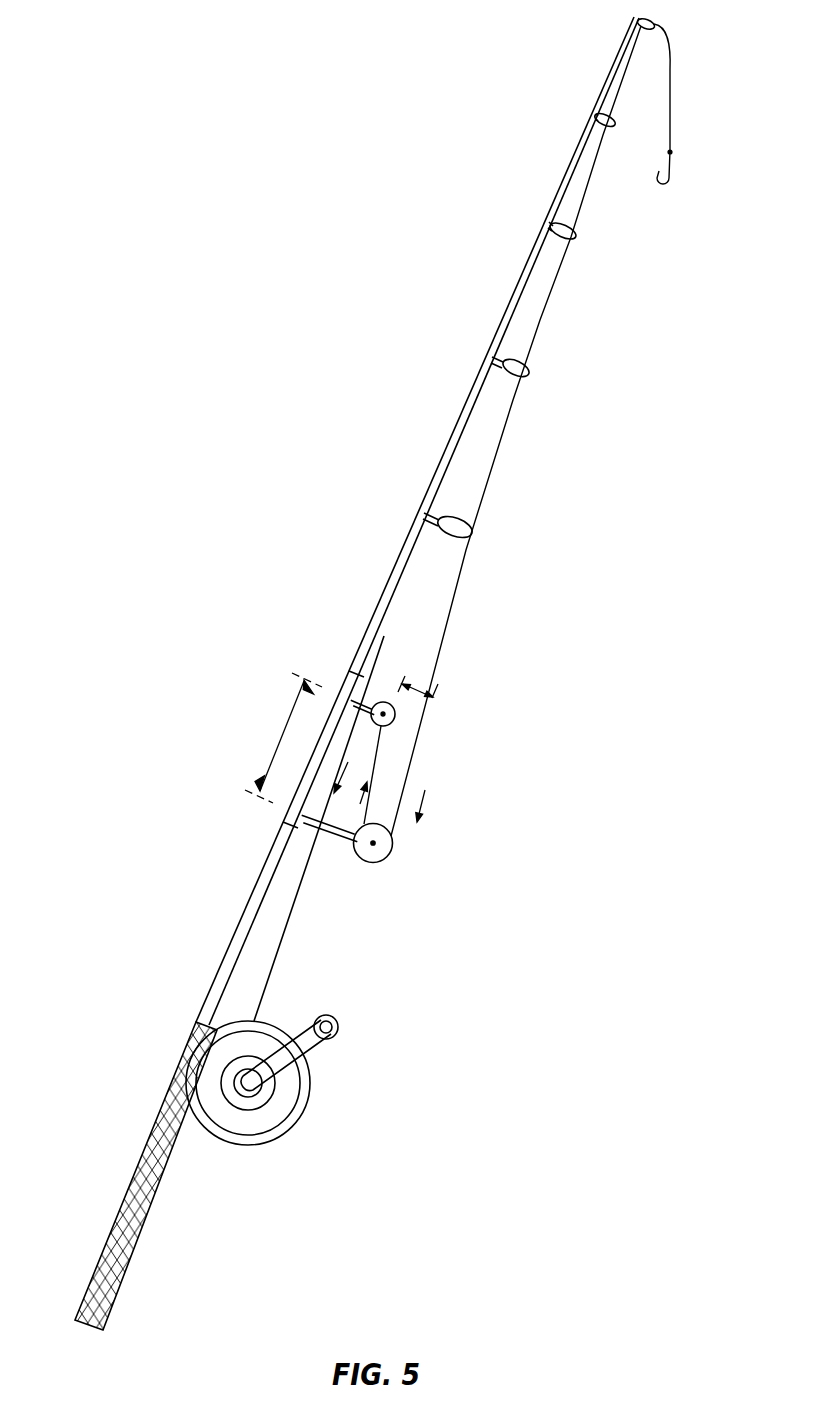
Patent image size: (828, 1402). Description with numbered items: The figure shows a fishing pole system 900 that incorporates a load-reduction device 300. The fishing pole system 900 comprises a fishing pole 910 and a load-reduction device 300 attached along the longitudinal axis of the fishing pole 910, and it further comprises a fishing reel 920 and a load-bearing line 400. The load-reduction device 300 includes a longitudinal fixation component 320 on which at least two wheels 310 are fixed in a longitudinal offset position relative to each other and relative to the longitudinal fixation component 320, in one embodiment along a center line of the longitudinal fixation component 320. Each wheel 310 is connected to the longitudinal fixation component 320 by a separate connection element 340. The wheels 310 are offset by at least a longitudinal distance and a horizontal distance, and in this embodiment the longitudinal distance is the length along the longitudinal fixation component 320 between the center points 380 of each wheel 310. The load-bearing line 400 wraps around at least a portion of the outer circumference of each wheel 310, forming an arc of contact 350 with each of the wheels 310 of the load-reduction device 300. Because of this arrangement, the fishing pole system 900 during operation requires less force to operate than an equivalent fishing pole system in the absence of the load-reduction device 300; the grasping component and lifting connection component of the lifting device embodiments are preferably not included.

The fishing pole system 900 is at (263, 475).
The fishing pole 910 is at (447, 457).
The fishing reel 920 is at (282, 1103).
The load-bearing line 400 is at (277, 944).
The load-reduction device 300 is at (412, 875).
The wheels 310 is at (394, 721).
The longitudinal fixation component 320 is at (349, 678).
The connection element 340 is at (384, 636).
The arc of contact 350 is at (378, 702).
The center points 380 is at (386, 713).